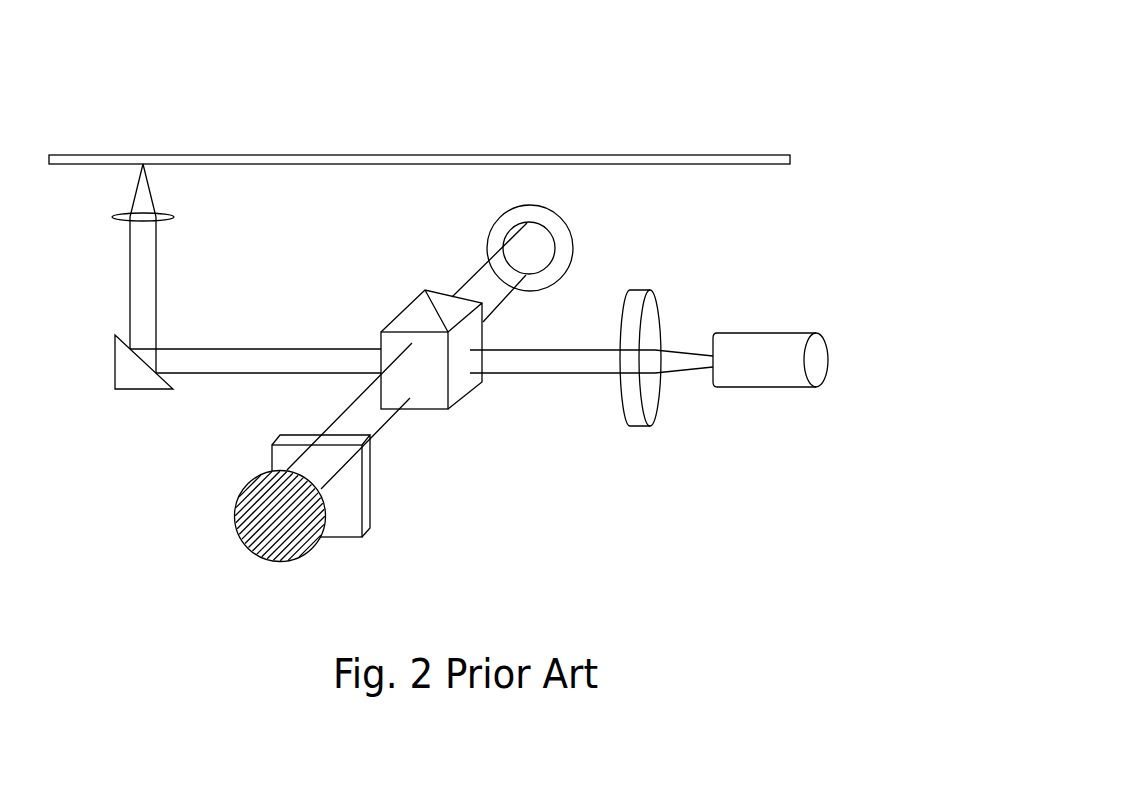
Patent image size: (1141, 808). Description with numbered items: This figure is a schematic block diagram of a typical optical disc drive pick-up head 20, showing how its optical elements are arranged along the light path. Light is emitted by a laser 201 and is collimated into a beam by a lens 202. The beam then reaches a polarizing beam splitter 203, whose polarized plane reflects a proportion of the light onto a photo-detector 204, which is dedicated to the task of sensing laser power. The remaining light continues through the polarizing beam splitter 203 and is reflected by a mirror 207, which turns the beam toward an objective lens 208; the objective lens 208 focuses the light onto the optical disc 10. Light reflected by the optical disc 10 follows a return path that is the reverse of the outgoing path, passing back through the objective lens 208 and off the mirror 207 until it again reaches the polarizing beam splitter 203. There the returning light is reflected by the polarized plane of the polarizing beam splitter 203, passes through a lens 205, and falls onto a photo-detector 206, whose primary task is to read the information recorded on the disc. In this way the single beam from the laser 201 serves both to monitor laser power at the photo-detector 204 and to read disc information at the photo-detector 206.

The optical disc 10 is at (418, 155).
The optical pickup head (prior art) 20 is at (845, 102).
The laser 201 is at (755, 330).
The lens 202 is at (642, 290).
The polarizing beam splitter (PBS) 203 is at (467, 395).
The photo-detector 204 is at (572, 240).
The lens 205 is at (363, 537).
The photo-detector 206 is at (295, 562).
The mirror 207 is at (140, 389).
The objective lens 208 is at (176, 217).